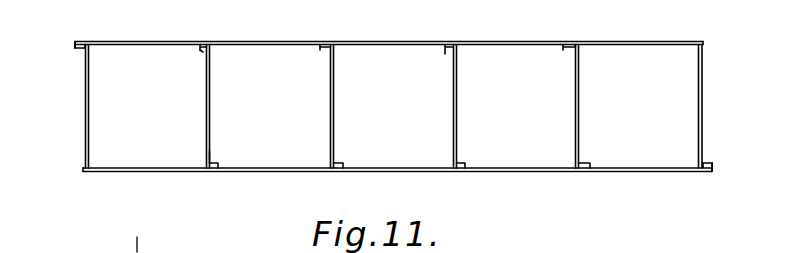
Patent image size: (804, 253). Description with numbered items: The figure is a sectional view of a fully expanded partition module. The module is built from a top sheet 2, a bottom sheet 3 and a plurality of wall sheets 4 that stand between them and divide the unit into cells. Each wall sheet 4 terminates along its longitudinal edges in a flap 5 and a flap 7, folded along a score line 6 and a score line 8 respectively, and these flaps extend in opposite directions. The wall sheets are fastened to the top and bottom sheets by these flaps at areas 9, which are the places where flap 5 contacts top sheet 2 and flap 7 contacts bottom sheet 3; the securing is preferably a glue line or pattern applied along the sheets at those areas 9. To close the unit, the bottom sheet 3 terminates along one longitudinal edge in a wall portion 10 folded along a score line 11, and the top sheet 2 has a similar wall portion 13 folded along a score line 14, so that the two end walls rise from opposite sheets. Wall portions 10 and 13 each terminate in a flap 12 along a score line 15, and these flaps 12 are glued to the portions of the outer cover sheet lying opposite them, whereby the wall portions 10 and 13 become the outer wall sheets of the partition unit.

The top sheet 2 is at (489, 42).
The bottom sheet 3 is at (415, 171).
The wall sheet 4 is at (210, 78).
The flap 5 is at (200, 48).
The score line 6 is at (205, 48).
The flap 7 is at (218, 163).
The score line 8 is at (214, 163).
The area 9 is at (330, 42).
The wall portion 10 is at (85, 98).
The score line 11 is at (83, 170).
The flap 12 is at (82, 41).
The wall portion 13 is at (703, 81).
The score line 14 is at (703, 42).
The score line 15 is at (82, 50).